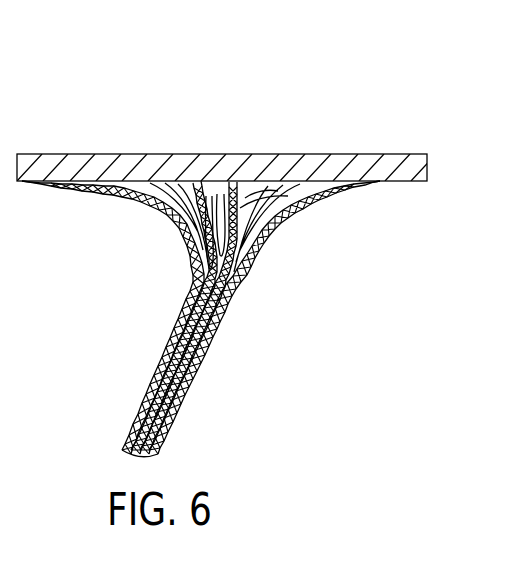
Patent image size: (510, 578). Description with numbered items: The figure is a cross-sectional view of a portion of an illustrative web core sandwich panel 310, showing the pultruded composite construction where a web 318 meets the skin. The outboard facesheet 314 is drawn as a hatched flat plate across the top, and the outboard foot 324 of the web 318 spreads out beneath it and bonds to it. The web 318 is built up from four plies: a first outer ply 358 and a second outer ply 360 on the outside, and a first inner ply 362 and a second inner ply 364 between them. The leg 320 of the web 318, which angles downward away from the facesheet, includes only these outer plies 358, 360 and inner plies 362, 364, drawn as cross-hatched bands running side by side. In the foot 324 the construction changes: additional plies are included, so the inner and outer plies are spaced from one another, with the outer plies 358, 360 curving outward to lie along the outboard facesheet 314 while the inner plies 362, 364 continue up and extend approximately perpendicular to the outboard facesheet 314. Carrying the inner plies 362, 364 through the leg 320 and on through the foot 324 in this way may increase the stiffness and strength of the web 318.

The sandwich panel 310 is at (64, 124).
The outboard facesheet 314 is at (362, 166).
The web 318 is at (124, 339).
The leg 320 is at (209, 394).
The outboard foot 324 is at (292, 254).
The first outer ply 358 is at (163, 208).
The second outer ply 360 is at (298, 210).
The first inner ply 362 is at (193, 182).
The second inner ply 364 is at (235, 182).